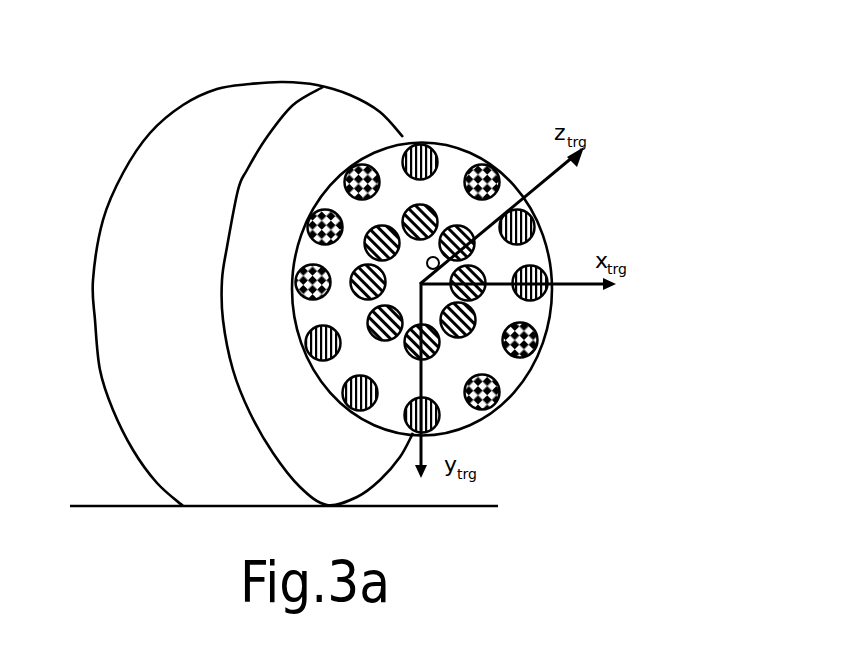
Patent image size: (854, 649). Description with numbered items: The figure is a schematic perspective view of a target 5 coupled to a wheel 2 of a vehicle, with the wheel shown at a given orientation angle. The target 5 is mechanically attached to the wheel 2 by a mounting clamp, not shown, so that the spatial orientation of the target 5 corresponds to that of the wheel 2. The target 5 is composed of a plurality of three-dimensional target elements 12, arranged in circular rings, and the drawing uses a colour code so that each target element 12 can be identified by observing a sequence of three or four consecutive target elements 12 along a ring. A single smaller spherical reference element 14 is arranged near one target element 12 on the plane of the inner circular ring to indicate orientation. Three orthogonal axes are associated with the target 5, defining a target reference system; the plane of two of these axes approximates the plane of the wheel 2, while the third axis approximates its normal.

The wheel 2 is at (130, 175).
The target 5 is at (422, 126).
The target element 12 is at (553, 273).
The reference element 14 is at (438, 257).